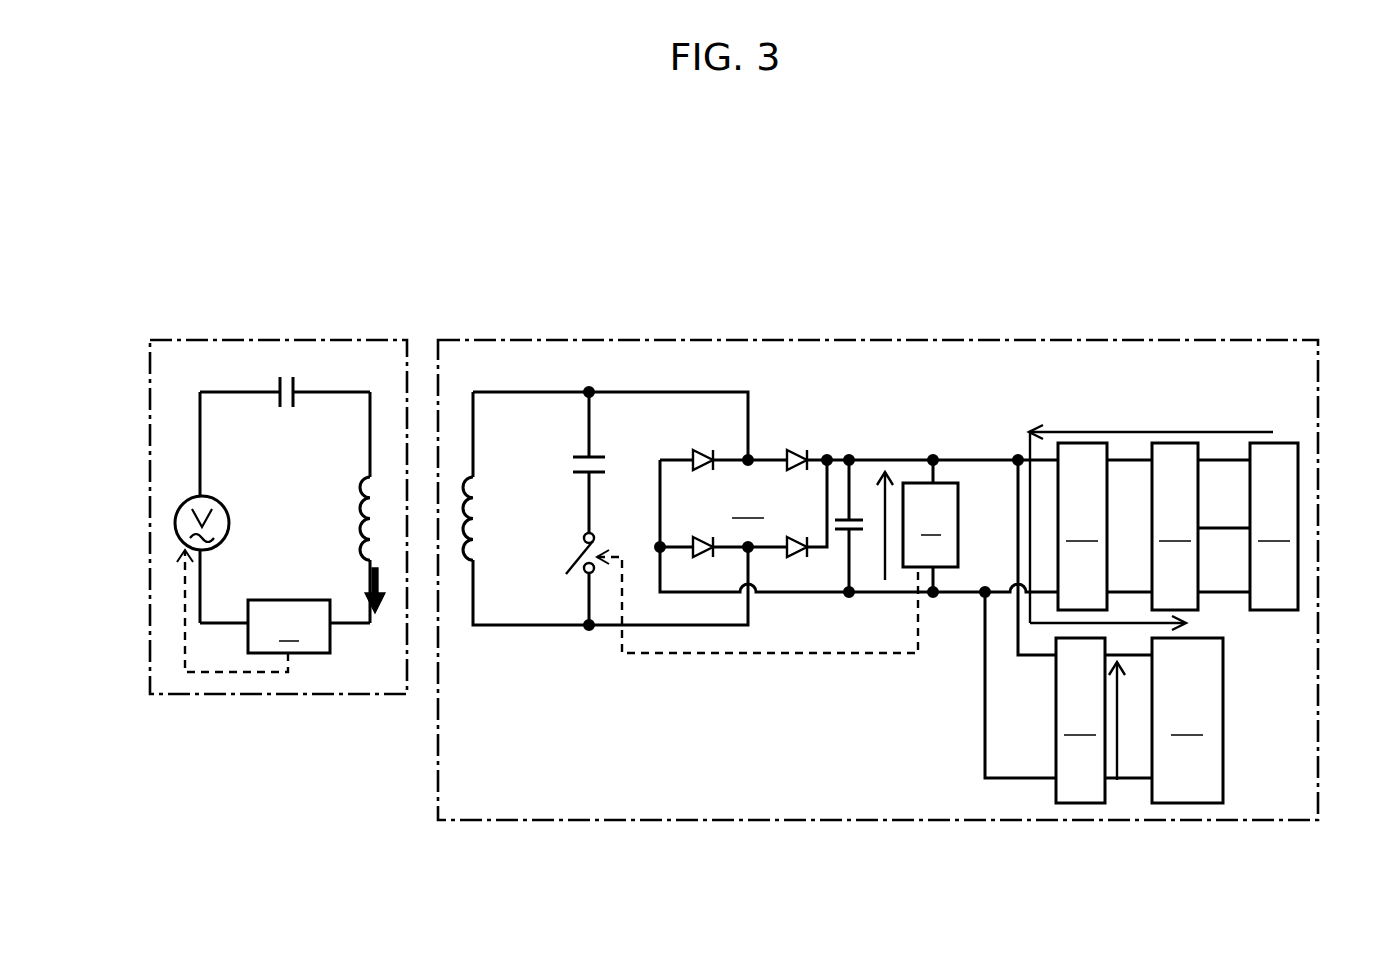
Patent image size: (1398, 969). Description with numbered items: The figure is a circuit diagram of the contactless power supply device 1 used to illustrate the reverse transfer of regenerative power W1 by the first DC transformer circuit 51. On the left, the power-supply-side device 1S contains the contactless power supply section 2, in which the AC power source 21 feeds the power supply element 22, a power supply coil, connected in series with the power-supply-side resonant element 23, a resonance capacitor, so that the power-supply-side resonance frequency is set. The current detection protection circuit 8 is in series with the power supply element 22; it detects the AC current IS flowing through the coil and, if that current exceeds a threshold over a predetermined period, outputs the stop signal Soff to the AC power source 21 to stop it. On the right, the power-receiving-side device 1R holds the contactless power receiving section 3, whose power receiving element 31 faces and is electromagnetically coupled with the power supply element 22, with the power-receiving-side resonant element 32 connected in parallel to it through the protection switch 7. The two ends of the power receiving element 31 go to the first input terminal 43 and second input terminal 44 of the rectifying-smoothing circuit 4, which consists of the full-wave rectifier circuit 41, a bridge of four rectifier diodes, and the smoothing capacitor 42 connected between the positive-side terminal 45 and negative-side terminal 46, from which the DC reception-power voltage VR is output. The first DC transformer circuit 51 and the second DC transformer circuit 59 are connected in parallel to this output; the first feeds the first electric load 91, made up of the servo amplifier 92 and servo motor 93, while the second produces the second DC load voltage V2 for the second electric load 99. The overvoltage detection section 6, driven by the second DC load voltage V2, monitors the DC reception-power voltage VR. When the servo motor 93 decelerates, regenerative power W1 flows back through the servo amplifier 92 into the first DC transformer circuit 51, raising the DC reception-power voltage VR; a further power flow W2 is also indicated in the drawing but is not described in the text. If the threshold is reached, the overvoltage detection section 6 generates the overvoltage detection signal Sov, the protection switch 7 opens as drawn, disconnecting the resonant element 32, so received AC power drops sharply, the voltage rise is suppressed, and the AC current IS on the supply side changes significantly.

The contactless power supply device 1 is at (122, 200).
The power-supply-side device 1S is at (185, 338).
The power-receiving-side device 1R is at (1275, 338).
The contactless power supply section 2 is at (255, 372).
The AC power source 21 is at (177, 513).
The power supply element 22 is at (376, 477).
The power-supply-side resonant element 23 is at (287, 375).
The current detection protection circuit 8 is at (289, 626).
The stop signal Soff is at (255, 673).
The AC current IS is at (380, 583).
The contactless power receiving section 3 is at (527, 372).
The power receiving element 31 is at (462, 477).
The power-receiving-side resonant element 32 is at (602, 465).
The protection switch 7 is at (565, 575).
The overvoltage detection signal Sov is at (745, 655).
The rectifying-smoothing circuit 4 is at (857, 536).
The full-wave rectifier circuit 41 is at (753, 521).
The smoothing capacitor 42 is at (855, 516).
The first input terminal 43 is at (748, 458).
The second input terminal 44 is at (747, 550).
The positive-side terminal 45 is at (850, 458).
The negative-side terminal 46 is at (851, 595).
The DC reception-power voltage VR is at (885, 582).
The overvoltage detection section 6 is at (930, 526).
The first DC transformer circuit 51 is at (1082, 526).
The servo amplifier 92 is at (1175, 526).
The servo motor 93 is at (1274, 526).
The second DC transformer circuit 59 is at (1080, 720).
The second electric load 99 is at (1187, 720).
The first electric load 91 is at (1286, 430).
The regenerative power W1 is at (1133, 432).
The power flow path W2 is at (1153, 613).
The second DC load voltage V2 is at (1120, 750).